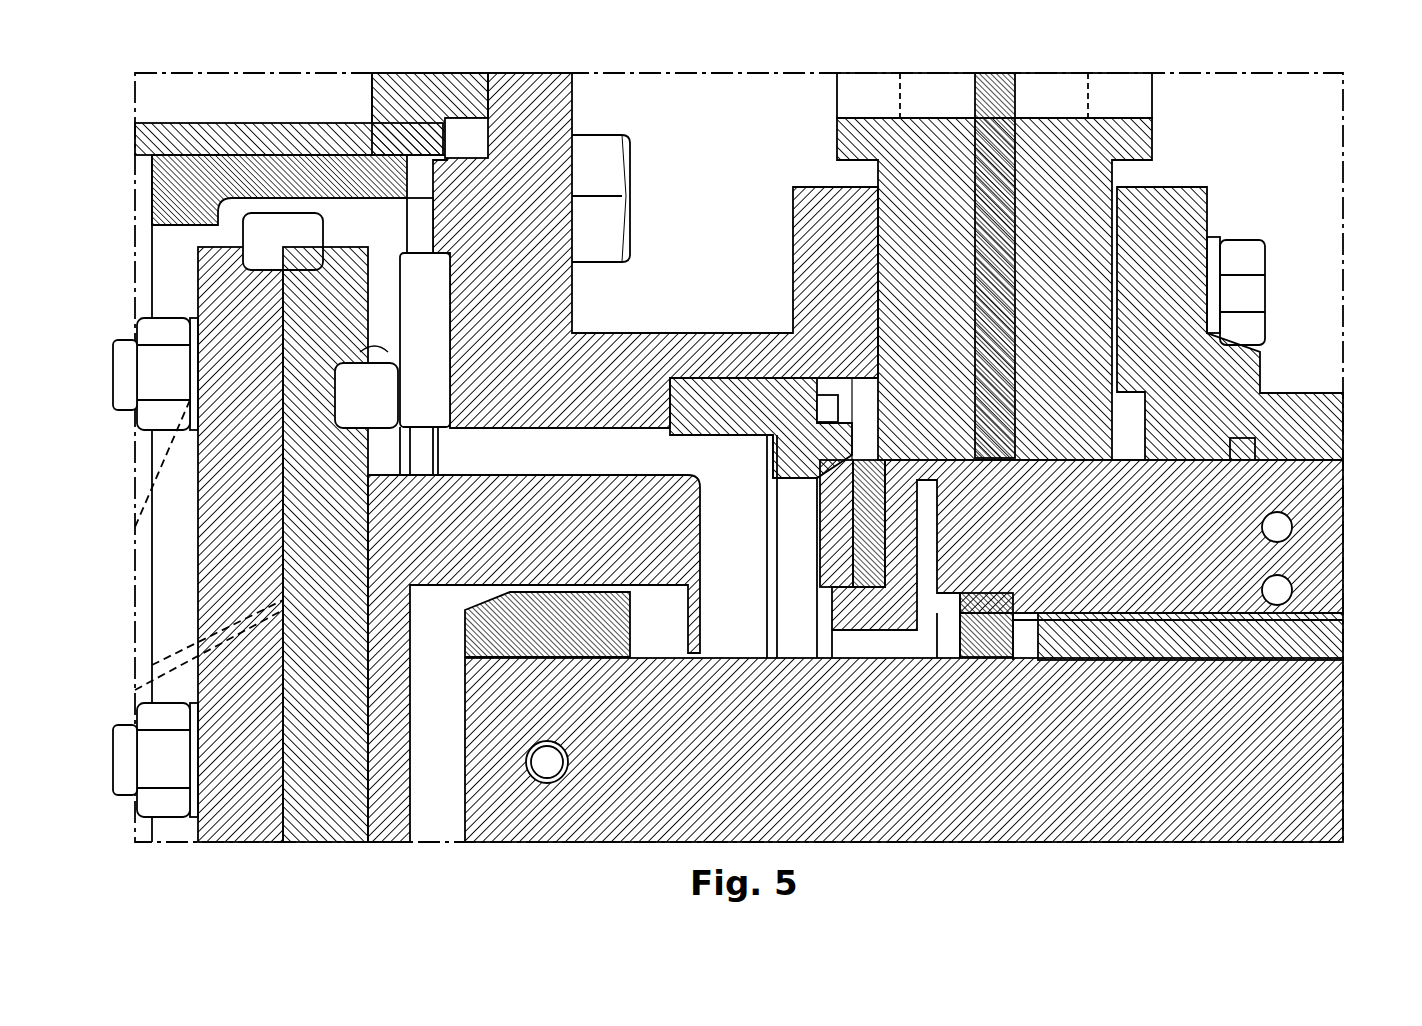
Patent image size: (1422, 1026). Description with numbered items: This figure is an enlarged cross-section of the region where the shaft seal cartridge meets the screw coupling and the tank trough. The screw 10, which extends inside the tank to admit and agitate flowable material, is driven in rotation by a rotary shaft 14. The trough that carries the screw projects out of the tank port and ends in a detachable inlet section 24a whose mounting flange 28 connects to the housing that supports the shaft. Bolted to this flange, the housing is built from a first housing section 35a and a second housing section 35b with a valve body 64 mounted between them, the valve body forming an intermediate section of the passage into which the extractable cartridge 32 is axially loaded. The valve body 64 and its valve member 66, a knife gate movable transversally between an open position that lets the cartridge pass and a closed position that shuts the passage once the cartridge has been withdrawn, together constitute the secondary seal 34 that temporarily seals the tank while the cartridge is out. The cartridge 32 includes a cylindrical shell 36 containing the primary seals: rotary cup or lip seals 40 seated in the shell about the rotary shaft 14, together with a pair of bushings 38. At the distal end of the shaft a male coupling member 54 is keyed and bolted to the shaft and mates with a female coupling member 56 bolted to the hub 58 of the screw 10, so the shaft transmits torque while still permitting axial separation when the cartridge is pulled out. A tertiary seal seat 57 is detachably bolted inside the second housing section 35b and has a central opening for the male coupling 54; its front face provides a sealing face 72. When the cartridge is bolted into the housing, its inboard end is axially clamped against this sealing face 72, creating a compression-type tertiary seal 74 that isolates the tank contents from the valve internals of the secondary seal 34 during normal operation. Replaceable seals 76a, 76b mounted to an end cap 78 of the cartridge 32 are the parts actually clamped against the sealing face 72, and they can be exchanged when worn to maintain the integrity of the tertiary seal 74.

The screw 10 is at (138, 581).
The rotary shaft 14 is at (1160, 785).
The inlet section 24a is at (192, 123).
The mounting flange 28 is at (418, 92).
The cartridge 32 is at (1348, 484).
The secondary seal 34 is at (1312, 68).
The first housing section 35a is at (1288, 380).
The second housing section 35b is at (550, 107).
The cylindrical shell 36 is at (1300, 542).
The bushings 38 is at (1300, 630).
The rotary cup or lip seals 40 is at (1000, 660).
The coupling member 54 is at (568, 625).
The coupling member 56 is at (388, 828).
The tertiary seal seat 57 is at (763, 398).
The hub 58 is at (283, 848).
The valve body 64 is at (1065, 172).
The valve member 66 is at (1013, 90).
The sealing face 72 is at (799, 470).
The tertiary seal 74 is at (852, 455).
The replaceable seal 76a is at (845, 632).
The replaceable seal 76b is at (878, 634).
The end cap 78 is at (990, 657).